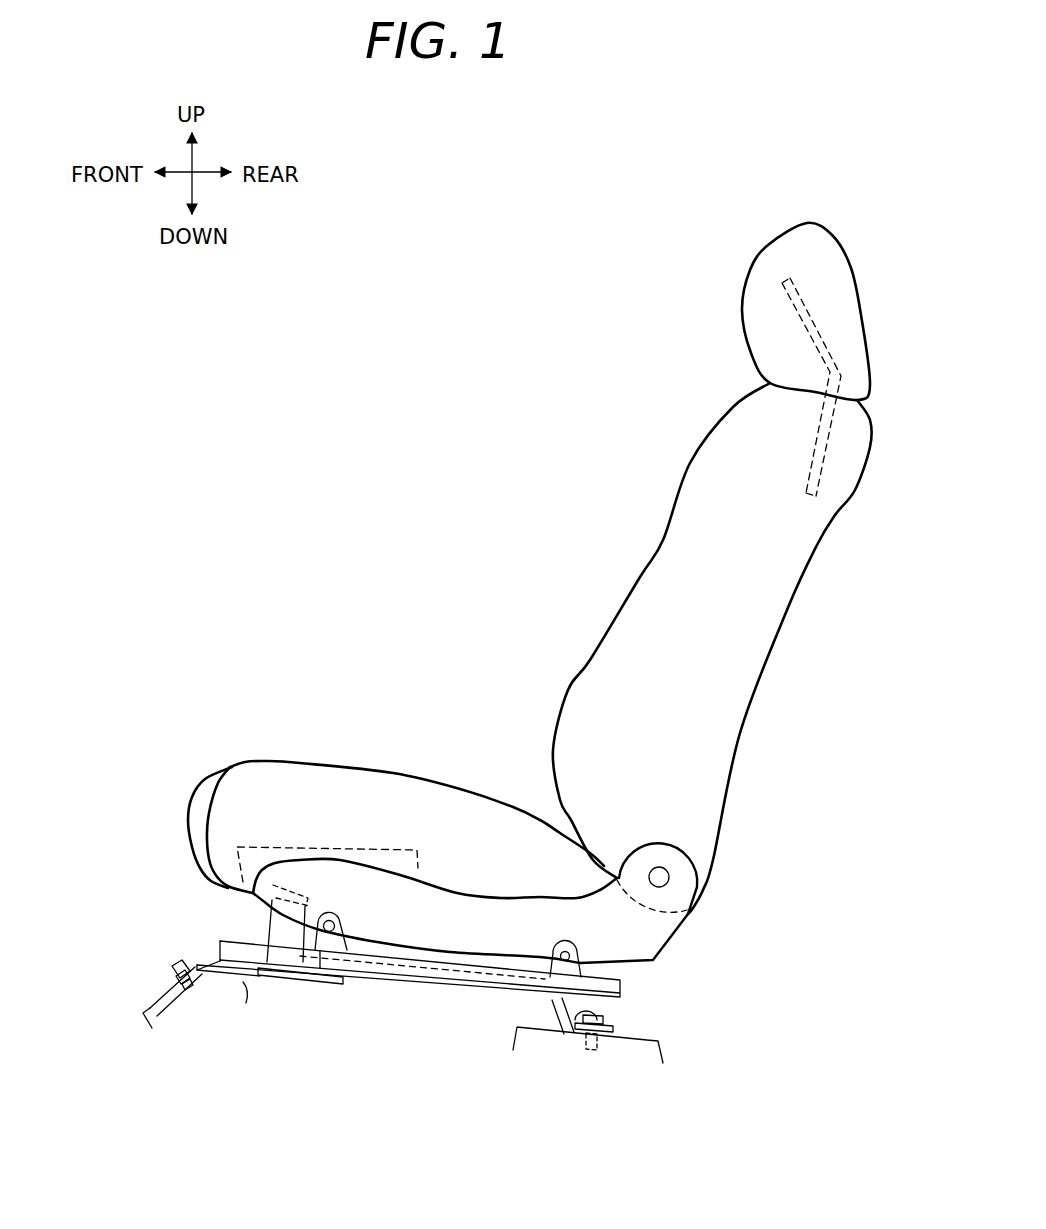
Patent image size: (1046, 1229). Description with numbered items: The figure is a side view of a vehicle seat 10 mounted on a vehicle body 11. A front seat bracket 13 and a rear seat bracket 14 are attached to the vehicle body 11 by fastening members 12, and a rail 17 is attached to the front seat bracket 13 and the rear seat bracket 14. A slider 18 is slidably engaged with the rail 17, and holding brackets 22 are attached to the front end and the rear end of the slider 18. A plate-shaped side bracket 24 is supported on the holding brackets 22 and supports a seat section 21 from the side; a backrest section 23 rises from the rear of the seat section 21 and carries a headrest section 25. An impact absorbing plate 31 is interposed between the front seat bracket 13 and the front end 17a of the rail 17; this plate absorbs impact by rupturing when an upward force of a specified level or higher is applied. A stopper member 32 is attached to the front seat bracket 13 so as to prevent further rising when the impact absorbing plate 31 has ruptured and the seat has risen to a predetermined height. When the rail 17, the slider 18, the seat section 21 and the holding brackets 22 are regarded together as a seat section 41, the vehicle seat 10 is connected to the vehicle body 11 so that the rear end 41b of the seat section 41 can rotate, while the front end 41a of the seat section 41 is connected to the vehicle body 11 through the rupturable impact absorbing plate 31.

The vehicle seat 10 is at (494, 373).
The vehicle body 11 is at (150, 1007).
The fastening member 12 is at (173, 970).
The front seat bracket 13 is at (168, 983).
The rear seat bracket 14 is at (610, 1022).
The rail 17 is at (215, 943).
The front end of rail 17a is at (240, 947).
The slider 18 is at (623, 980).
The seat section 21 is at (388, 788).
The holding bracket 22 is at (340, 945).
The backrest section 23 is at (655, 575).
The side bracket 24 is at (650, 927).
The headrest section 25 is at (791, 243).
The impact absorbing plate 31 is at (197, 958).
The stopper member 32 is at (227, 887).
The seat section 41 is at (215, 750).
The front end of seat section 41a is at (340, 903).
The rear end of seat section 41b is at (590, 950).